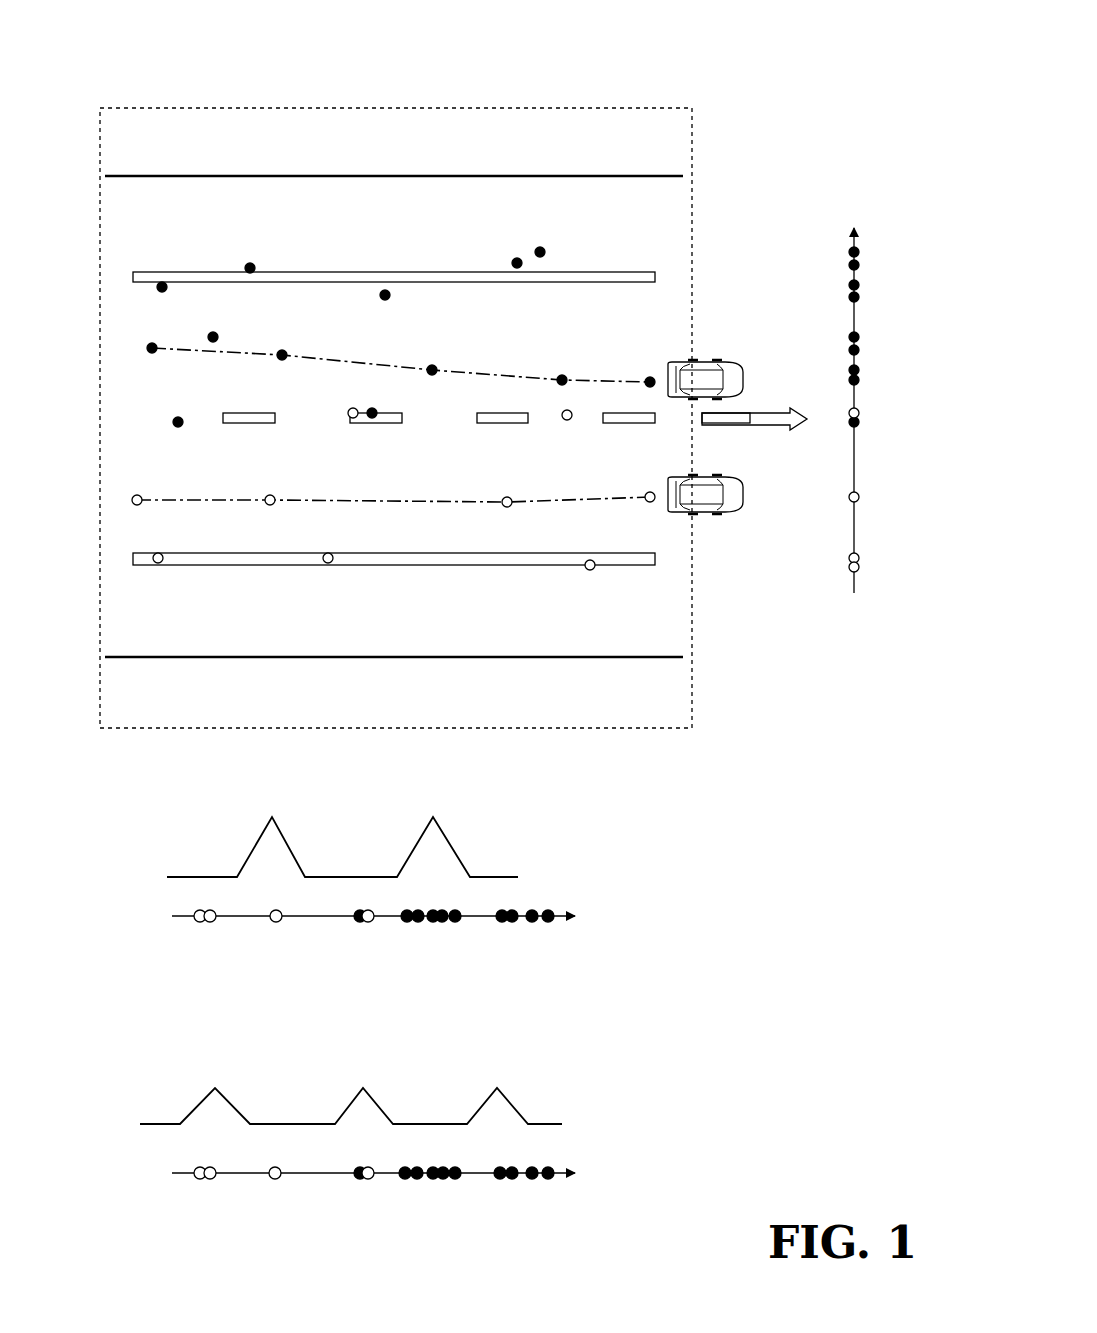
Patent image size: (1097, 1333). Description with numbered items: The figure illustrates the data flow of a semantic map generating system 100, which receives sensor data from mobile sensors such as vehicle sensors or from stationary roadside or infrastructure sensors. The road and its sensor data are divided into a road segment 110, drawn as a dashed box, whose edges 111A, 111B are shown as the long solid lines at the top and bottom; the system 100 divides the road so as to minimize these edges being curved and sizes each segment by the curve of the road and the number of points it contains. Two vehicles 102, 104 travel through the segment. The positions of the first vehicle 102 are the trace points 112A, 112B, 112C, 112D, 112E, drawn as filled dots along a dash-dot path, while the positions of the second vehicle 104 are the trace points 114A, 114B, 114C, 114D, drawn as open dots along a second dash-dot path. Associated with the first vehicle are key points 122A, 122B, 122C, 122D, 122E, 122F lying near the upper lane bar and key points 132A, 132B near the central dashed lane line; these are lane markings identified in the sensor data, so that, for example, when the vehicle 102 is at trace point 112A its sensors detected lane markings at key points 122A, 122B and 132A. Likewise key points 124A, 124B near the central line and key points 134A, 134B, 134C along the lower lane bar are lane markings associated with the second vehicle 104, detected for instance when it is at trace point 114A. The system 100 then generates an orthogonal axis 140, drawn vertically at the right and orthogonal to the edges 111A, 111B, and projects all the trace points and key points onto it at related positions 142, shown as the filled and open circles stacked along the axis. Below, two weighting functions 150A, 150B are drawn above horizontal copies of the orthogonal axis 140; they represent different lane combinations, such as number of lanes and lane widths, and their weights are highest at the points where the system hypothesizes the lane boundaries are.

The semantic map generating system 100 is at (822, 74).
The road segment 110 is at (637, 108).
The edge 111A is at (295, 176).
The edge 111B is at (445, 657).
The key point 122A is at (162, 282).
The key point 122B is at (213, 332).
The key point 122C is at (250, 263).
The key point 122D is at (385, 290).
The key point 122E is at (517, 258).
The key point 122F is at (540, 247).
The trace point 112A is at (152, 343).
The trace point 112B is at (282, 350).
The trace point 112C is at (432, 365).
The trace point 112D is at (562, 375).
The trace point 112E is at (650, 377).
The key point 132A is at (178, 425).
The key point 132B is at (372, 418).
The key point 124A is at (350, 417).
The key point 124B is at (566, 420).
The trace point 114A is at (137, 505).
The trace point 114B is at (270, 505).
The trace point 114C is at (507, 507).
The trace point 114D is at (650, 502).
The key point 134A is at (158, 563).
The key point 134B is at (328, 563).
The key point 134C is at (590, 570).
The vehicle 102 is at (716, 362).
The vehicle 104 is at (706, 514).
The orthogonal axis 140 is at (854, 325).
The related positions 142 is at (884, 280).
The weighting function 150A is at (455, 852).
The weighting function 150B is at (505, 1100).